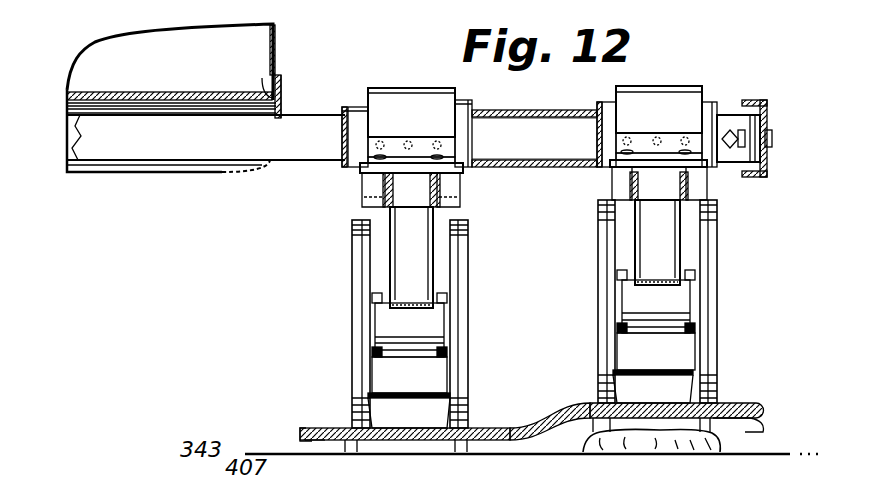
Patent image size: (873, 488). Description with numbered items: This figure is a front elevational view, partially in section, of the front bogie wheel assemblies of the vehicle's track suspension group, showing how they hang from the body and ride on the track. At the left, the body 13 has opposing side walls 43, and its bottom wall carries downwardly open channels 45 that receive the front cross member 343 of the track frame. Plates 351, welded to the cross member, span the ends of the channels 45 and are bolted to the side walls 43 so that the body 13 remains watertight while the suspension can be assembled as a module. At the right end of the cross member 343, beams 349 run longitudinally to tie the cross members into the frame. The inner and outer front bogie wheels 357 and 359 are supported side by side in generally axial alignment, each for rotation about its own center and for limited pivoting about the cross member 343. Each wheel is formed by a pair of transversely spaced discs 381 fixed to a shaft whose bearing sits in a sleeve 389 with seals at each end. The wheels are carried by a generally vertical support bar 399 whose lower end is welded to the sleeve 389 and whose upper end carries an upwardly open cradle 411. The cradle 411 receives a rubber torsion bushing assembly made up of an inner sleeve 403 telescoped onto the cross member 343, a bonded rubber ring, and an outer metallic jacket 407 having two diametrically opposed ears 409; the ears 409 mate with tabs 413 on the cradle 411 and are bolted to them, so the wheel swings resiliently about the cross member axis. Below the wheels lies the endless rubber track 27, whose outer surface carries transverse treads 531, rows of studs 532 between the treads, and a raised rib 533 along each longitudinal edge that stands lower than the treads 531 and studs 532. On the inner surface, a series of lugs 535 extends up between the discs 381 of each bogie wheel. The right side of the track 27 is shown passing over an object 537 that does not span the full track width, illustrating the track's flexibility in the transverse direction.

The body 13 is at (277, 48).
The side walls 43 is at (282, 70).
The plates 351 is at (282, 96).
The channels 45 is at (69, 152).
The inner sleeve 403 is at (487, 99).
The front cross member 343 is at (540, 147).
The metallic jacket 407 is at (425, 97).
The ears 409 is at (393, 160).
The tabs 413 is at (360, 175).
The cradle 411 is at (463, 203).
The beams 349 is at (767, 172).
The support bar 399 is at (407, 262).
The discs 381 is at (352, 330).
The inner front bogie wheel 357 is at (479, 297).
The outer front bogie wheel 359 is at (726, 297).
The sleeve 389 is at (414, 337).
The lugs 535 is at (637, 382).
The studs 532 is at (368, 457).
The rib 533 is at (300, 440).
The tracks 27 is at (315, 423).
The transverse treads 531 is at (495, 456).
The object 537 is at (667, 452).